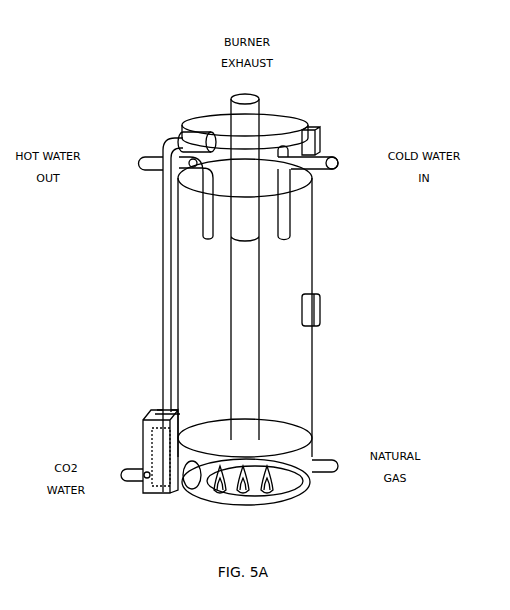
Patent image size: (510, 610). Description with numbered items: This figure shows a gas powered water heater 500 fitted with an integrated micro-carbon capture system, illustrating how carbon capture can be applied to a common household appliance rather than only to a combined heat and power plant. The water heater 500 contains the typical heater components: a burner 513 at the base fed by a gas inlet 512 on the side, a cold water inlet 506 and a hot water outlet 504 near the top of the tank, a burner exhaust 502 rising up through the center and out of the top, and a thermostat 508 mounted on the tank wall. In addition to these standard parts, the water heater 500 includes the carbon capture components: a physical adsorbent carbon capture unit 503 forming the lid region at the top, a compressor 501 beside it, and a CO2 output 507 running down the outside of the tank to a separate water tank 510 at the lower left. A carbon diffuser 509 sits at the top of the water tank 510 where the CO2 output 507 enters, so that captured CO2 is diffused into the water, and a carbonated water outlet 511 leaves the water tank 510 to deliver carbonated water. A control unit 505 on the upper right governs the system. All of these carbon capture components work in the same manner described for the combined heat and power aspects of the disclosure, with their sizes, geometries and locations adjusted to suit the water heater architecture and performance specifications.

The water heater 500 is at (313, 249).
The compressor 501 is at (190, 137).
The burner exhaust 502 is at (238, 104).
The physical adsorbent carbon capture unit 503 is at (283, 120).
The hot water outlet 504 is at (148, 156).
The control unit 505 is at (321, 133).
The cold water inlet 506 is at (325, 167).
The CO2 output 507 is at (169, 253).
The thermostat 508 is at (322, 307).
The carbon diffuser 509 is at (158, 422).
The water tank 510 is at (142, 446).
The carbonated water outlet 511 is at (128, 487).
The gas inlet 512 is at (326, 458).
The burner 513 is at (264, 491).